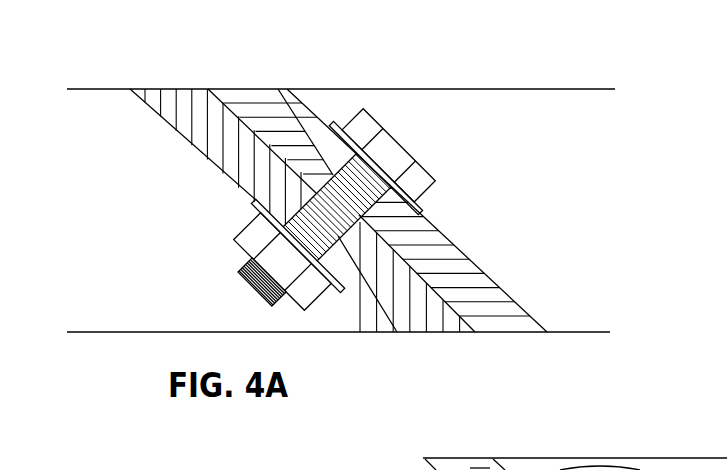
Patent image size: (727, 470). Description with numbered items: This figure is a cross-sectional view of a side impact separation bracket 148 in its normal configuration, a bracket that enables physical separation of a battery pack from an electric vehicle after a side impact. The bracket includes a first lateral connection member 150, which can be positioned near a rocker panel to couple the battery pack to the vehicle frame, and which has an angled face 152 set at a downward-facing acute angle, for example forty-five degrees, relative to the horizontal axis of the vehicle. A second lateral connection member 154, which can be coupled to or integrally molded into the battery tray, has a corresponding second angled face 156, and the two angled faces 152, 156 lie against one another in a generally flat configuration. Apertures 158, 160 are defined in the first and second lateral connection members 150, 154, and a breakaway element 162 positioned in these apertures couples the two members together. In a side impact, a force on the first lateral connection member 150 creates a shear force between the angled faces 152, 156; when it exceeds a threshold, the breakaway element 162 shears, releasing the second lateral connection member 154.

The side impact separation bracket 148 is at (333, 75).
The first lateral connection member 150 is at (480, 267).
The angled face 152 is at (435, 300).
The second lateral connection member 154 is at (218, 155).
The second angled face 156 is at (240, 118).
The aperture 158 is at (396, 214).
The aperture 160 is at (343, 243).
The breakaway element 162 is at (336, 190).